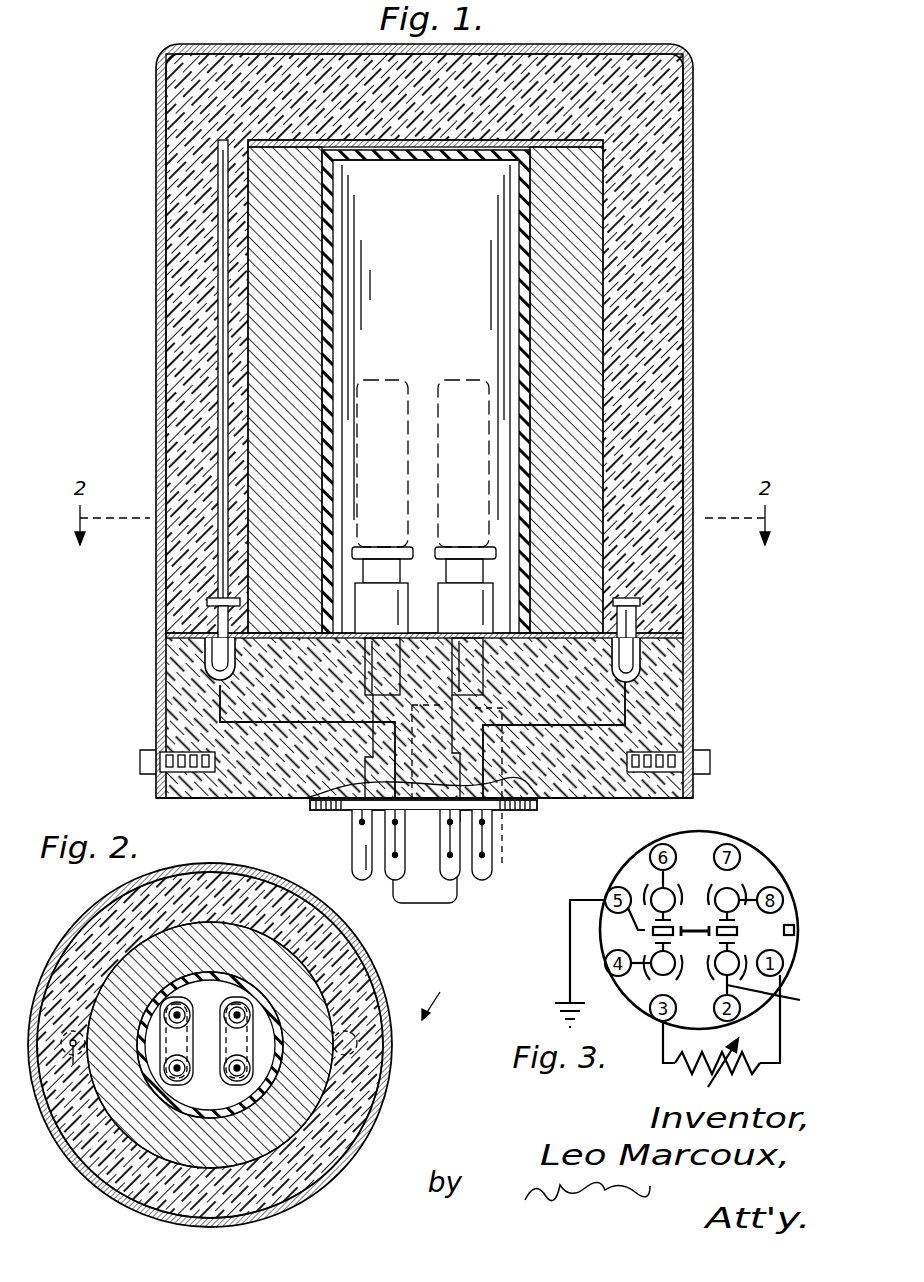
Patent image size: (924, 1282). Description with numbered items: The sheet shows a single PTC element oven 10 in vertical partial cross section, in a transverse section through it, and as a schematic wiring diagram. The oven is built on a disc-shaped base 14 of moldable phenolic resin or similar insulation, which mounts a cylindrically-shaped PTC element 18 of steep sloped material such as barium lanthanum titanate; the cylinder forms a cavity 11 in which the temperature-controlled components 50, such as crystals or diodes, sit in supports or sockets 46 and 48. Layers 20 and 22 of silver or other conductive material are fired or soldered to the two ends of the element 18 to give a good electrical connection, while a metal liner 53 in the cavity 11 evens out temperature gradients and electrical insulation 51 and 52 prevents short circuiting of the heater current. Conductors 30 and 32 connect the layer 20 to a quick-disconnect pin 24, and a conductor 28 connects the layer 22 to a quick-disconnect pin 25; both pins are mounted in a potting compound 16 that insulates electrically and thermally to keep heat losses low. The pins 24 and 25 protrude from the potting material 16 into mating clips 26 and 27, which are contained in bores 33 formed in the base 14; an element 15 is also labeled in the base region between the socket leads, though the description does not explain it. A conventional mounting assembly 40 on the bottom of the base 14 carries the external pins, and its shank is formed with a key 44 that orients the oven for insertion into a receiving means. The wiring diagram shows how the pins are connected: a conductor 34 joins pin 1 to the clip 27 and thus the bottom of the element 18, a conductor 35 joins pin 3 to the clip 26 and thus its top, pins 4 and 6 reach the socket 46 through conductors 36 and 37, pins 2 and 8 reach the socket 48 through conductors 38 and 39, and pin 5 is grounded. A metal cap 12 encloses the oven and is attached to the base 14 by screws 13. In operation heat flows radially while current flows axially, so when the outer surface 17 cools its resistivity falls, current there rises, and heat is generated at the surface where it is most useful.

In FIG. 1, the oven 10 is at (122, 88).
In FIG. 1, the cavity 11 is at (412, 272).
In FIG. 1, the metal cap 12 is at (157, 232).
In FIG. 2, the metal cap 12 is at (47, 1125).
In FIG. 1, the screws 13 is at (157, 760).
In FIG. 1, the base 14 is at (590, 782).
In FIG. 1, the spacer between leads 15 is at (454, 672).
In FIG. 1, the potting compound 16 is at (650, 218).
In FIG. 2, the potting compound 16 is at (118, 912).
In FIG. 1, the outer surface 17 is at (603, 306).
In FIG. 2, the outer surface 17 is at (118, 954).
In FIG. 1, the PTC element 18 is at (528, 267).
In FIG. 2, the PTC element 18 is at (140, 1000).
In FIG. 3, the PTC element 18 is at (678, 1068).
In FIG. 1, the conductive layer 20 is at (500, 142).
In FIG. 1, the conductive layer 22 is at (278, 633).
In FIG. 2, the conductive layer 22 is at (266, 1050).
In FIG. 1, the quick-disconnect pin 24 is at (212, 640).
In FIG. 2, the quick-disconnect pin 24 is at (70, 1023).
In FIG. 1, the quick-disconnect pin 25 is at (630, 642).
In FIG. 2, the quick-disconnect pin 25 is at (347, 1030).
In FIG. 1, the clip 26 is at (205, 660).
In FIG. 1, the clip 27 is at (648, 665).
In FIG. 1, the conductor 28 is at (624, 606).
In FIG. 2, the conductor 28 is at (335, 1064).
In FIG. 1, the conductor 30 is at (218, 330).
In FIG. 2, the conductor 30 is at (84, 1066).
In FIG. 1, the conductor 32 is at (235, 140).
In FIG. 1, the bores 33 is at (240, 652).
In FIG. 1, the conductor 34 is at (567, 725).
In FIG. 3, the conductor 34 is at (782, 1030).
In FIG. 1, the conductor 35 is at (286, 722).
In FIG. 3, the conductor 35 is at (653, 1040).
In FIG. 1, the conductor 36 is at (370, 744).
In FIG. 3, the conductor 36 is at (637, 987).
In FIG. 1, the conductor 37 is at (430, 784).
In FIG. 3, the conductor 37 is at (663, 880).
In FIG. 1, the conductor 38 is at (462, 740).
In FIG. 3, the conductor 38 is at (777, 993).
In FIG. 1, the conductor 39 is at (504, 745).
In FIG. 3, the conductor 39 is at (760, 893).
In FIG. 1, the mounting assembly 40 is at (516, 816).
In FIG. 3, the mounting assembly 40 is at (762, 832).
In FIG. 1, the key 44 is at (458, 885).
In FIG. 3, the key 44 is at (796, 934).
In FIG. 1, the socket 46 is at (381, 639).
In FIG. 2, the socket 46 is at (196, 1020).
In FIG. 3, the socket 46 is at (682, 892).
In FIG. 1, the socket 48 is at (465, 639).
In FIG. 2, the socket 48 is at (226, 1080).
In FIG. 3, the socket 48 is at (707, 970).
In FIG. 1, the components 50 is at (402, 378).
In FIG. 1, the electrical insulation 51 is at (512, 227).
In FIG. 2, the electrical insulation 51 is at (196, 975).
In FIG. 1, the electrical insulation 52 is at (482, 163).
In FIG. 1, the metal liner 53 is at (342, 226).
In FIG. 2, the metal liner 53 is at (224, 975).
In FIG. 1, the pin 1 is at (488, 877).
In FIG. 1, the pin 2 is at (440, 895).
In FIG. 1, the pin 3 is at (399, 882).
In FIG. 1, the pin 4 is at (356, 866).
In FIG. 1, the pin 5 is at (355, 843).
In FIG. 1, the pin 6 is at (386, 872).
In FIG. 1, the pin 8 is at (500, 872).